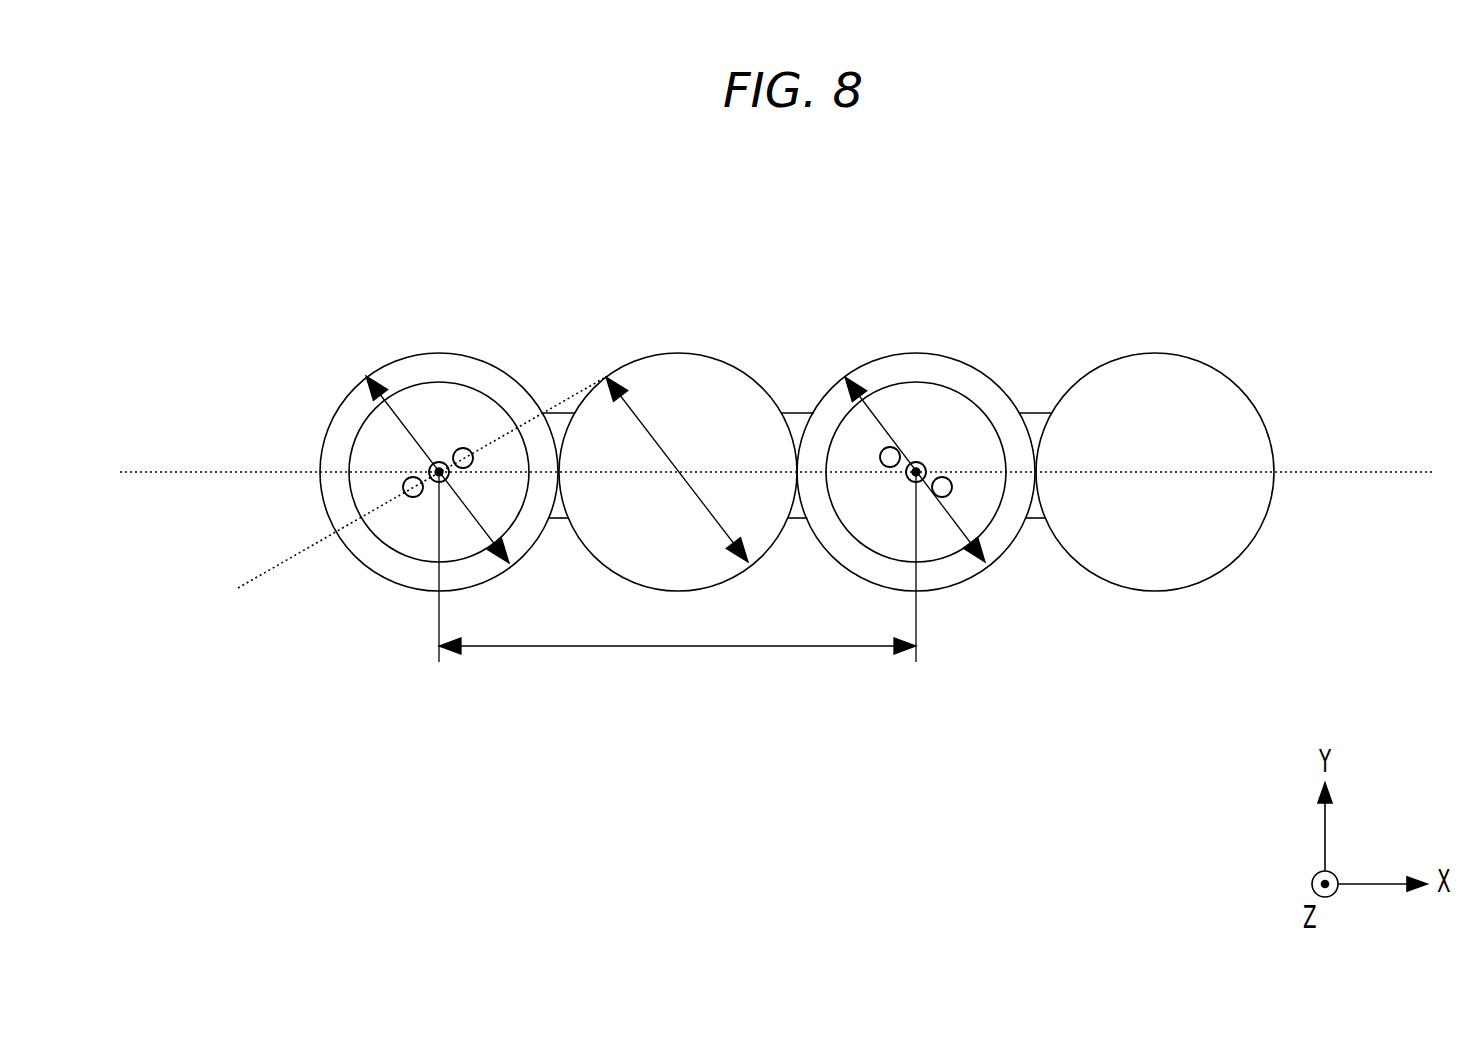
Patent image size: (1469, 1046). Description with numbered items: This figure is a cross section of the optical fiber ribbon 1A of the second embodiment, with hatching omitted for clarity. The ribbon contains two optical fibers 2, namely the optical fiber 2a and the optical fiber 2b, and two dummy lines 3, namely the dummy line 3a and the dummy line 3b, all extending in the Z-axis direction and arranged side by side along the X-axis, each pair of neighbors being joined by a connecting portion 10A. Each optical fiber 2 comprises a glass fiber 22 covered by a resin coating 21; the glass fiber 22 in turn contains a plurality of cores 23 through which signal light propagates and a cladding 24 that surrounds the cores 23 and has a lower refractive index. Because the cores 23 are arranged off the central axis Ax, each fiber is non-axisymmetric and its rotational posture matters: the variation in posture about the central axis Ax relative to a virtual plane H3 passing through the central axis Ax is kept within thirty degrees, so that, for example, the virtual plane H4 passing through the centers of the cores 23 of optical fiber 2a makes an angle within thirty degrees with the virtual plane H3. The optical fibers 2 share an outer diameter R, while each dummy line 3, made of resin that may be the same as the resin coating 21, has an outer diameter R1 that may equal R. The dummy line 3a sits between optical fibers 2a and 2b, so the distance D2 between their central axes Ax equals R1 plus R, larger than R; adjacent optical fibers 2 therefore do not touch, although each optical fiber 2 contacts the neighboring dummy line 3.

The optical fiber ribbon 1A is at (376, 194).
The optical fiber 2 is at (677, 423).
The optical fiber 2a is at (439, 425).
The optical fiber 2b is at (916, 423).
The dummy line 3 is at (916, 419).
The dummy line 3a is at (678, 424).
The dummy line 3b is at (1155, 419).
The connecting portion 10A is at (791, 401).
The resin coating 21 is at (677, 411).
The glass fiber 22 is at (656, 533).
The core 23 is at (677, 457).
The cladding 24 is at (649, 437).
The outer diameter of the optical fiber R is at (675, 469).
The outer diameter of the dummy line R1 is at (677, 407).
The central axis Ax is at (672, 467).
The virtual plane H3 is at (777, 428).
The virtual plane H4 is at (408, 483).
The distance D2 is at (677, 567).